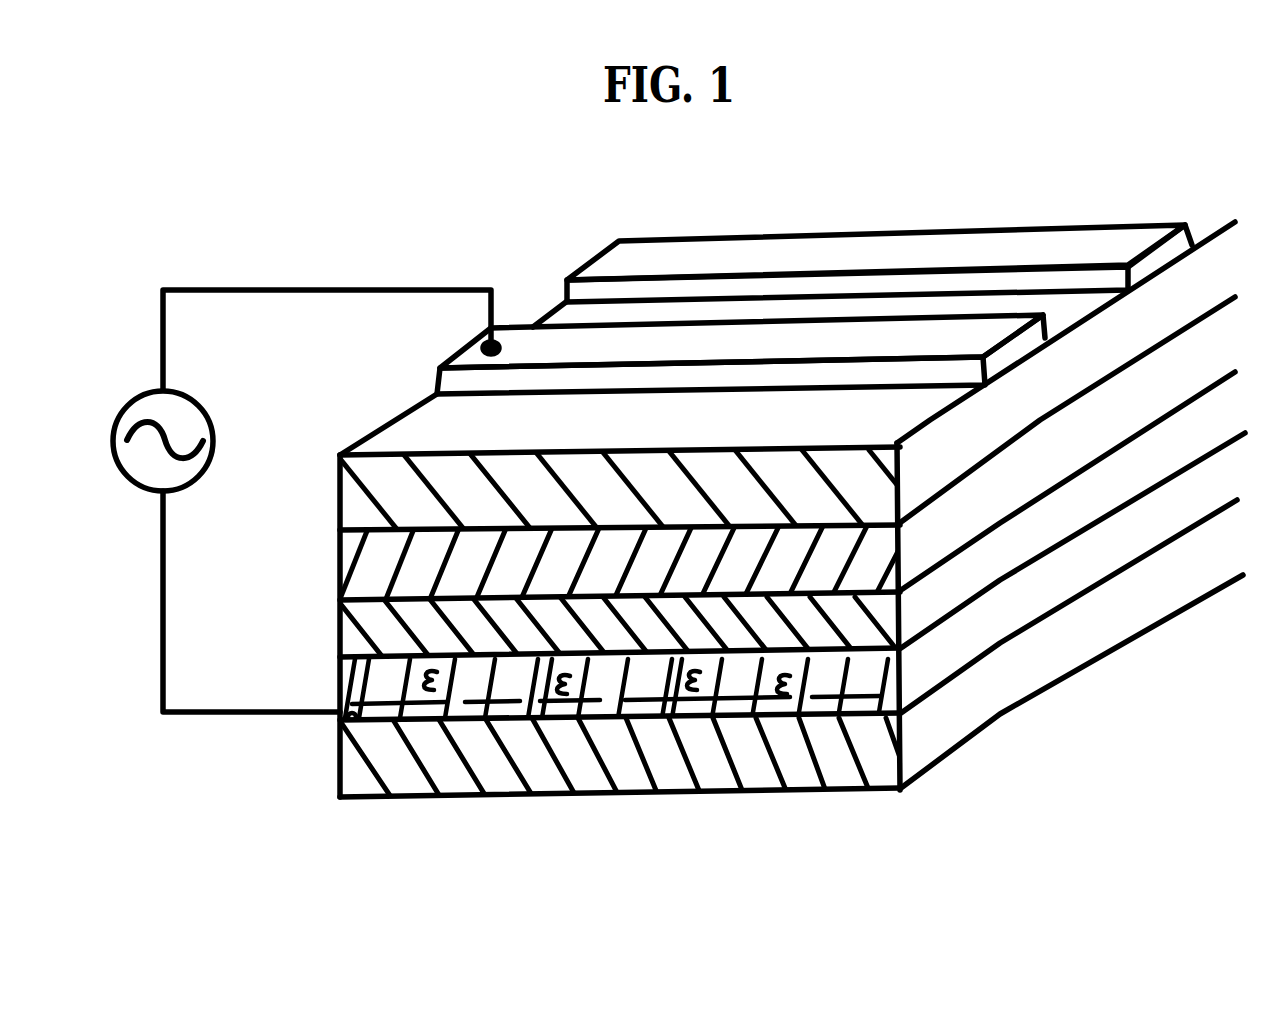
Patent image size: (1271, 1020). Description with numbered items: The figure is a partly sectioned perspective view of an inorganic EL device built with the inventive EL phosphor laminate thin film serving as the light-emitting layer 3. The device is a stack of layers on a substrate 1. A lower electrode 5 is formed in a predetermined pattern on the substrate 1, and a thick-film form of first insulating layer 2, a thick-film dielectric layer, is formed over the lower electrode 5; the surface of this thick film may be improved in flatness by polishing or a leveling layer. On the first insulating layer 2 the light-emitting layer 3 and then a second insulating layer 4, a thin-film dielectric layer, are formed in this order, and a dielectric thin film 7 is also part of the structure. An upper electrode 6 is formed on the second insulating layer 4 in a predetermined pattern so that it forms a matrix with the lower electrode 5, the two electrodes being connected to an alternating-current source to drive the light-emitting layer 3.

The substrate 1 is at (340, 792).
The first insulating layer (thick-film dielectric layer) 2 is at (338, 675).
The light-emitting layer 3 is at (340, 575).
The second insulating layer (thin-film dielectric layer) 4 is at (345, 500).
The lower electrode 5 is at (478, 722).
The upper electrode 6 is at (438, 368).
The dielectric thin film 7 is at (898, 606).